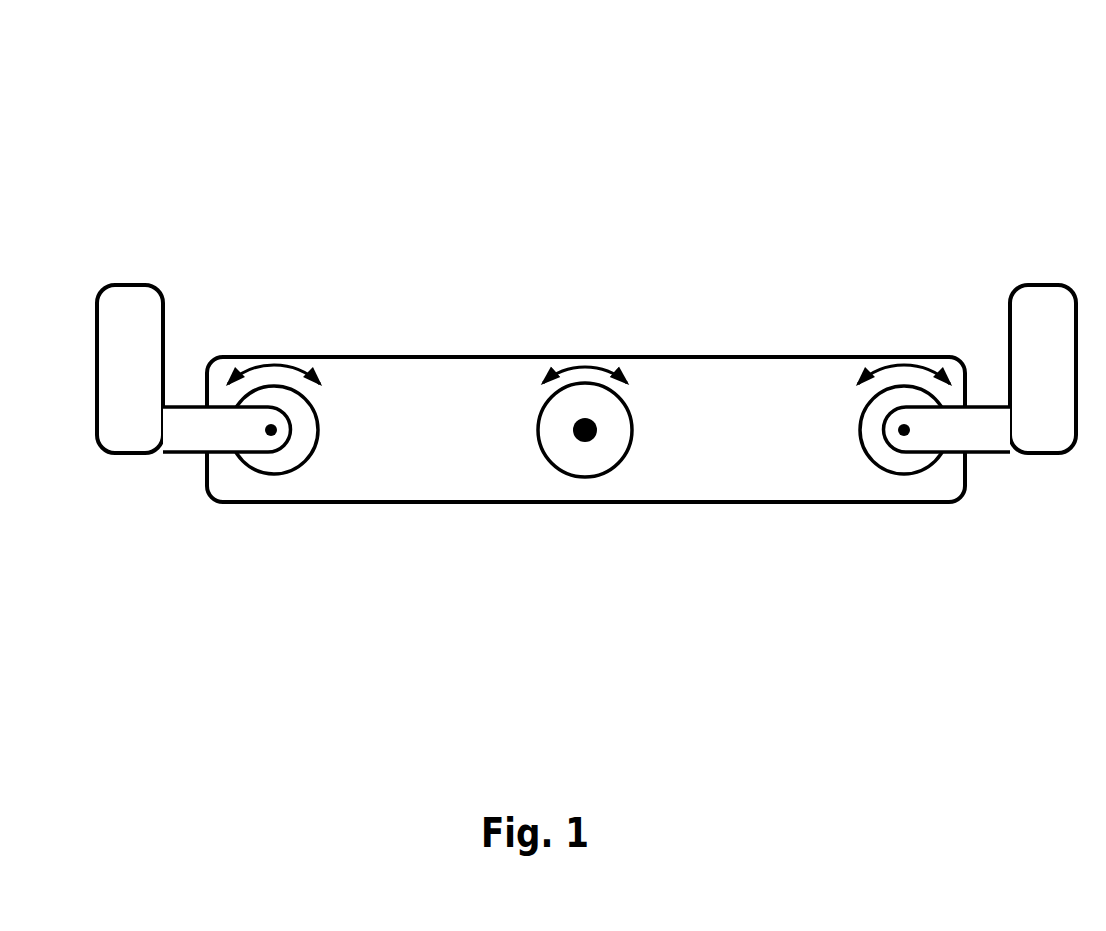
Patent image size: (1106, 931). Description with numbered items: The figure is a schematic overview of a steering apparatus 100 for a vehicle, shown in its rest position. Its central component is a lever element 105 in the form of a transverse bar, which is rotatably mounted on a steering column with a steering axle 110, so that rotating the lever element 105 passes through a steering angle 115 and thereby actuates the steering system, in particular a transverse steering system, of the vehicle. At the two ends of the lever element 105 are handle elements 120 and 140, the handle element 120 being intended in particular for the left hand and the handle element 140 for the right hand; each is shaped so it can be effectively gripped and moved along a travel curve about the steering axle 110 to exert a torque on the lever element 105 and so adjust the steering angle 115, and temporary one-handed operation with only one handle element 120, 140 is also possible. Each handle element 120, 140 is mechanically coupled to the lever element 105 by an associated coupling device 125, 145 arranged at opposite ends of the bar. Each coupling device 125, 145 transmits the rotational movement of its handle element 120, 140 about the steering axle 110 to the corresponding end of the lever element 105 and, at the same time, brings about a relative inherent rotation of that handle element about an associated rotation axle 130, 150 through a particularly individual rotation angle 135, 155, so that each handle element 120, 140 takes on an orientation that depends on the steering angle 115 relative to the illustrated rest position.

The steering apparatus 100 is at (975, 198).
The lever element 105 is at (733, 356).
The steering axle 110 is at (585, 440).
The steering angle 115 is at (590, 358).
The handle element 120 is at (128, 435).
The coupling device 125 is at (317, 432).
The rotation axle 130 is at (271, 432).
The rotation angle 135 is at (274, 365).
The handle element 140 is at (1044, 435).
The coupling device 145 is at (860, 430).
The rotation axle 150 is at (904, 432).
The rotation angle 155 is at (910, 365).